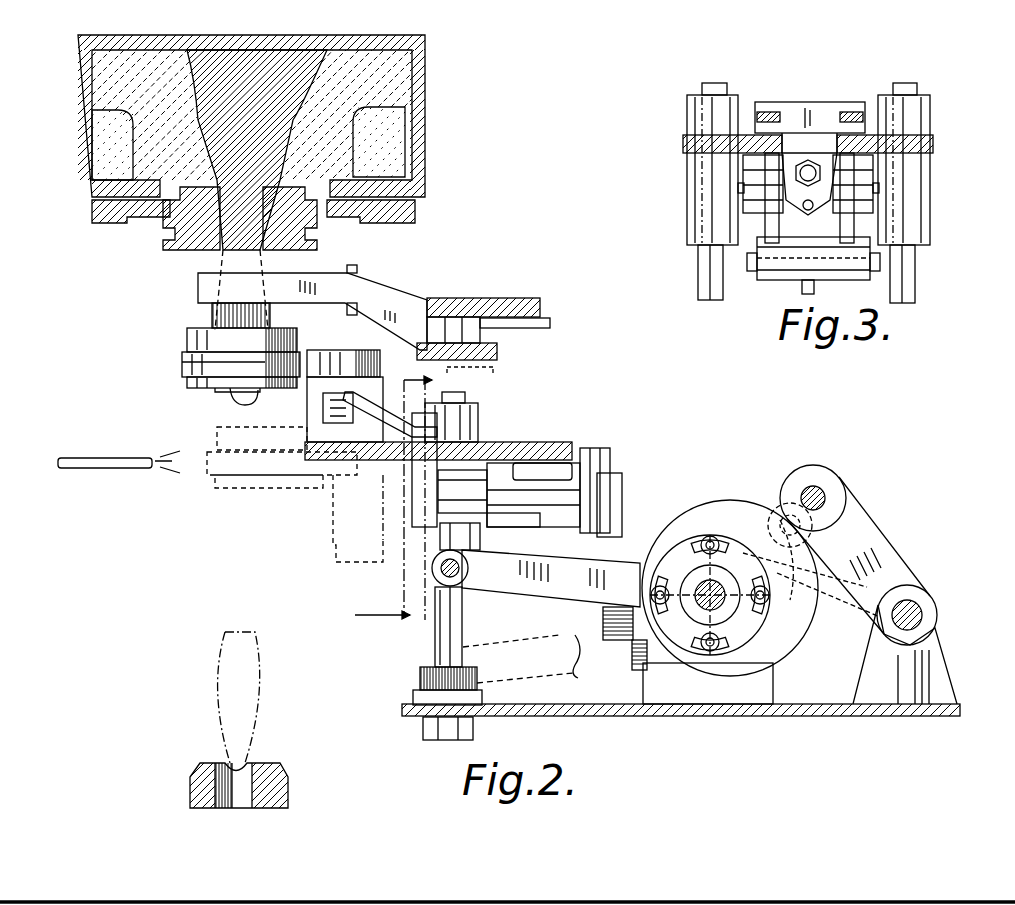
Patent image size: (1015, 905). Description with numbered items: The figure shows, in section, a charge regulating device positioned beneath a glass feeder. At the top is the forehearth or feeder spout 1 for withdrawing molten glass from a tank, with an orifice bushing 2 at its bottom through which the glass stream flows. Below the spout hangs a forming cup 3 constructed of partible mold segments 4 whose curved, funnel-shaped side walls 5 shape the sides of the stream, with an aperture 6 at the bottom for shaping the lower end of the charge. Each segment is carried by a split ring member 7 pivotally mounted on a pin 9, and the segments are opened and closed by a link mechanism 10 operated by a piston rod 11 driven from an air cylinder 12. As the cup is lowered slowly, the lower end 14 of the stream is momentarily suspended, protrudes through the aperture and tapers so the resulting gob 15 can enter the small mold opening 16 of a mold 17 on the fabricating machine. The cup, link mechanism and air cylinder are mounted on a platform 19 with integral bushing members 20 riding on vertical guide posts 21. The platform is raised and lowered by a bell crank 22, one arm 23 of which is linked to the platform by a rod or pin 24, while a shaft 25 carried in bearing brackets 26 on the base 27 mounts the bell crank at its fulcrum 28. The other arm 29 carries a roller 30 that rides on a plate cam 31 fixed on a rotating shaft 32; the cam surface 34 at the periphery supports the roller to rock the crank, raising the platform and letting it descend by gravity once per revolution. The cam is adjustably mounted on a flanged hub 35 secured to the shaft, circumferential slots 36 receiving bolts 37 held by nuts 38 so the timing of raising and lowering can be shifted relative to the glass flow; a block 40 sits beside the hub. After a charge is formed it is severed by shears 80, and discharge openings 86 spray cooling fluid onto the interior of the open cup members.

In FIG. 2, the feeder spout 1 is at (434, 109).
In FIG. 2, the orifice bushing 2 is at (170, 228).
In FIG. 2, the forming cup 3 is at (160, 338).
In FIG. 2, the mold segments 4 is at (200, 330).
In FIG. 2, the side walls 5 is at (200, 362).
In FIG. 2, the aperture 6 is at (225, 390).
In FIG. 2, the split ring member 7 is at (183, 360).
In FIG. 2, the pin 9 is at (365, 352).
In FIG. 2, the link mechanism 10 is at (362, 402).
In FIG. 3, the link mechanism 10 is at (850, 112).
In FIG. 2, the piston rod 11 is at (455, 480).
In FIG. 2, the air cylinder 12 is at (590, 450).
In FIG. 2, the lower end of the stream 14 is at (250, 396).
In FIG. 2, the gob 15 is at (255, 680).
In FIG. 2, the mold opening 16 is at (257, 763).
In FIG. 2, the mold 17 is at (285, 772).
In FIG. 2, the platform 19 is at (520, 442).
In FIG. 3, the platform 19 is at (683, 144).
In FIG. 2, the bushing members 20 is at (478, 420).
In FIG. 3, the bushing members 20 is at (688, 226).
In FIG. 2, the guide posts 21 is at (467, 398).
In FIG. 3, the guide posts 21 is at (722, 84).
In FIG. 2, the bell crank 22 is at (714, 600).
In FIG. 2, the arm 23 is at (548, 566).
In FIG. 3, the arm 23 is at (814, 290).
In FIG. 2, the rod or pin 24 is at (432, 568).
In FIG. 3, the rod or pin 24 is at (757, 265).
In FIG. 2, the shaft 25 is at (920, 608).
In FIG. 2, the bearing brackets 26 is at (940, 656).
In FIG. 2, the base 27 is at (830, 716).
In FIG. 2, the fulcrum 28 is at (937, 615).
In FIG. 2, the other arm 29 is at (870, 527).
In FIG. 2, the roller 30 is at (822, 470).
In FIG. 2, the cam 31 is at (785, 502).
In FIG. 2, the rotating shaft 32 is at (706, 612).
In FIG. 2, the cam surface 34 is at (782, 592).
In FIG. 2, the flanged hub 35 is at (640, 650).
In FIG. 2, the circumferential slots 36 is at (722, 540).
In FIG. 2, the bolts 37 is at (709, 537).
In FIG. 2, the nuts 38 is at (712, 535).
In FIG. 2, the block 40 is at (650, 675).
In FIG. 2, the shears 80 is at (390, 300).
In FIG. 2, the discharge openings 86 is at (132, 469).